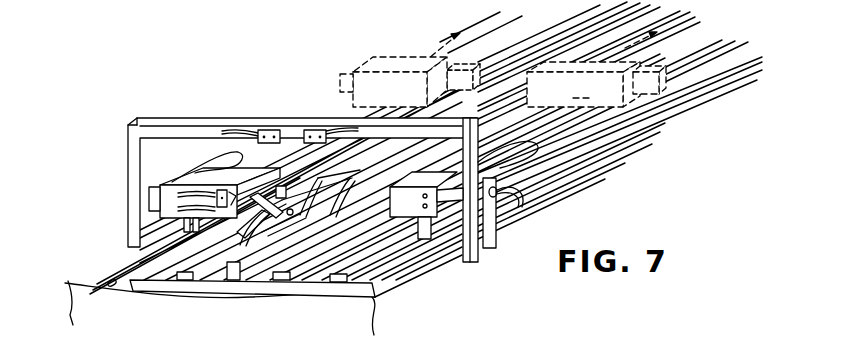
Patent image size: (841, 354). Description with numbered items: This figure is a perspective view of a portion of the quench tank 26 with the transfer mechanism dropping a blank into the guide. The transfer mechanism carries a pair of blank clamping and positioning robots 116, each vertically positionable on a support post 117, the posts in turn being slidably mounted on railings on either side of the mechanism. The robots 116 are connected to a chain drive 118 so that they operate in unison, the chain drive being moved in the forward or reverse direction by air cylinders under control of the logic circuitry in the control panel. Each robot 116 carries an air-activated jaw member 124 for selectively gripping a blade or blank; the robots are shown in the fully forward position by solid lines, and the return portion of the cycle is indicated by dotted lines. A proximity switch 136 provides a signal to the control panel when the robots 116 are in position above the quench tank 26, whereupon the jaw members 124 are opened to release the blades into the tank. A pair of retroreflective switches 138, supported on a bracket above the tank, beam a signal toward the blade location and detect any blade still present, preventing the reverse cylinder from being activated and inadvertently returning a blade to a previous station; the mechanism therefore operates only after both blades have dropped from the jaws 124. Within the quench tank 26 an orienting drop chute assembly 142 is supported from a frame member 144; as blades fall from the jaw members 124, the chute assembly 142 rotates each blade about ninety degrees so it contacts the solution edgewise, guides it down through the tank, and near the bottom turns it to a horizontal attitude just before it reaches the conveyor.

The quench tank 26 is at (68, 295).
The blank clamping and positioning robots 116 is at (197, 171).
The support posts 117 is at (182, 230).
The chain drive 118 is at (112, 281).
The air-activated jaw member 124 is at (335, 196).
The proximity switch 136 is at (522, 200).
The retroreflective switches 138 is at (318, 130).
The orienting drop chute assembly 142 is at (294, 215).
The frame member 144 is at (248, 270).